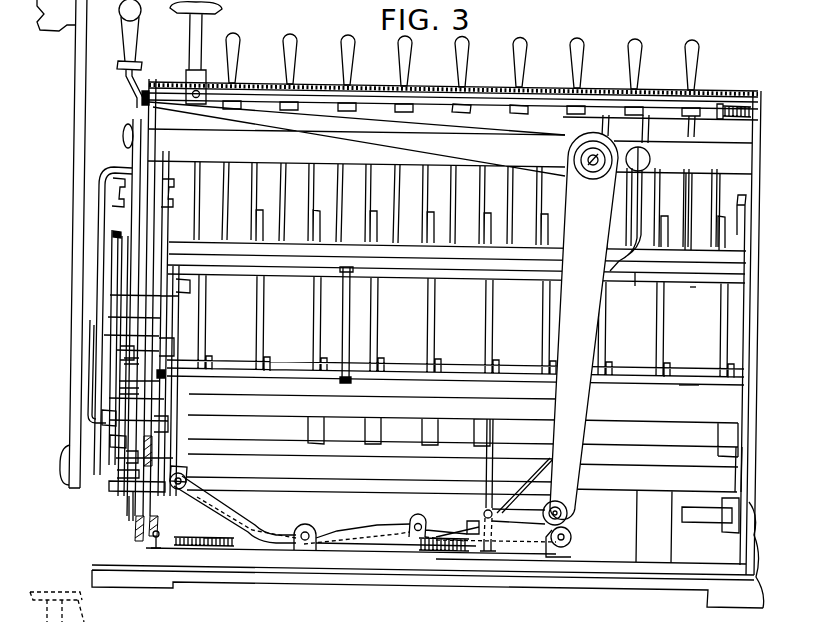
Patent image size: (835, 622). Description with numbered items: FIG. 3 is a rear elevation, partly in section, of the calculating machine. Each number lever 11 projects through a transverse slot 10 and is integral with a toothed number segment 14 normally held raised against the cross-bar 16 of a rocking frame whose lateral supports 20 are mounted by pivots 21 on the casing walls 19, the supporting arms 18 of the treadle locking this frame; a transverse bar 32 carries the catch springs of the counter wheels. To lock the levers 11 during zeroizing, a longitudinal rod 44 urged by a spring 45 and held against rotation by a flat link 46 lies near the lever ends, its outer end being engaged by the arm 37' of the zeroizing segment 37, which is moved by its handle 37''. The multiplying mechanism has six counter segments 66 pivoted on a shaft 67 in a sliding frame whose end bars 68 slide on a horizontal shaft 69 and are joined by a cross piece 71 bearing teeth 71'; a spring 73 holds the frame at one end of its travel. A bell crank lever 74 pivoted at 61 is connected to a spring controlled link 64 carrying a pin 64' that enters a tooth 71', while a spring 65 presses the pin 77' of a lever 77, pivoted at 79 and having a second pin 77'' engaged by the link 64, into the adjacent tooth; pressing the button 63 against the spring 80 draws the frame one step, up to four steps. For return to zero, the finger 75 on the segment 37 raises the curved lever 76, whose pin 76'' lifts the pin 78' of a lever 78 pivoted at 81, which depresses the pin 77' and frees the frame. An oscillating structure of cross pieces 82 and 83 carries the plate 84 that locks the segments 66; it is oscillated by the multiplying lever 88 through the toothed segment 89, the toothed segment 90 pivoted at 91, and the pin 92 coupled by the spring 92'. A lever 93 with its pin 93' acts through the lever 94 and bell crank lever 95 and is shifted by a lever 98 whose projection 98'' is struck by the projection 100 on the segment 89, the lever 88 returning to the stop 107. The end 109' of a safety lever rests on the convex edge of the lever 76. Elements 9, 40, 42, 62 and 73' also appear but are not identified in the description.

The link 9 is at (526, 494).
The transverse slots 10 is at (543, 98).
The number lever 11 is at (524, 62).
The toothed number segment 14 is at (436, 228).
The stop or cross-bar 16 is at (331, 244).
The lateral supporting arms 18 is at (732, 495).
The lateral walls 19 is at (746, 411).
The lateral frame supports 20 is at (749, 235).
The pivots 21 is at (745, 205).
The transverse bar 32 is at (614, 498).
The segment 37 is at (78, 340).
The arm 37' is at (125, 97).
The handle 37'' is at (117, 54).
The block 40 is at (108, 417).
The arm 42 is at (92, 325).
The longitudinal rod 44 is at (363, 107).
The spring 45 is at (733, 105).
The flat link 46 is at (151, 94).
The pivot 61 is at (593, 168).
The cross beam 62 is at (725, 167).
The button 63 is at (219, 7).
The spring controlled link 64 is at (572, 507).
The pin 64' is at (464, 516).
The spring 65 is at (496, 551).
The counter segments 66 is at (262, 310).
The shaft 67 is at (638, 435).
The end bars 68 is at (188, 429).
The horizontal shaft 69 is at (453, 469).
The cross piece 71 is at (372, 481).
The teeth 71' is at (354, 519).
The spring 73 is at (223, 512).
The spring 73' is at (442, 554).
The bell crank lever 74 is at (338, 131).
The finger 75 is at (124, 353).
The curved lever 76 is at (86, 465).
The pin 76'' is at (111, 518).
The lever 77 is at (500, 540).
The pin 77' is at (438, 515).
The pin 77'' is at (511, 480).
The lever 78 is at (436, 553).
The pin 78' is at (205, 471).
The pivot 79 is at (571, 539).
The spring 80 is at (633, 203).
The pivot 81 is at (294, 538).
The cross piece 82 is at (640, 273).
The cross piece 83 is at (689, 396).
The plate 84 is at (695, 295).
The multiplying lever 88 is at (82, 155).
The toothed segment 89 is at (116, 442).
The toothed segment 90 is at (129, 206).
The pivot 91 is at (114, 135).
The pin 92 is at (161, 317).
The spring 92' is at (80, 243).
The lever 93 is at (197, 348).
The pin 93' is at (185, 382).
The lever 94 is at (190, 292).
The bell crank lever 95 is at (160, 424).
The lever 98 is at (88, 374).
The projection 98'' is at (87, 401).
The projection 100 is at (125, 474).
The stop 107 is at (122, 486).
The end of lever 109' is at (83, 366).